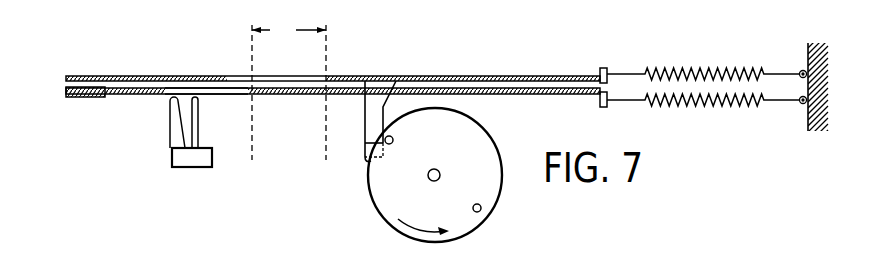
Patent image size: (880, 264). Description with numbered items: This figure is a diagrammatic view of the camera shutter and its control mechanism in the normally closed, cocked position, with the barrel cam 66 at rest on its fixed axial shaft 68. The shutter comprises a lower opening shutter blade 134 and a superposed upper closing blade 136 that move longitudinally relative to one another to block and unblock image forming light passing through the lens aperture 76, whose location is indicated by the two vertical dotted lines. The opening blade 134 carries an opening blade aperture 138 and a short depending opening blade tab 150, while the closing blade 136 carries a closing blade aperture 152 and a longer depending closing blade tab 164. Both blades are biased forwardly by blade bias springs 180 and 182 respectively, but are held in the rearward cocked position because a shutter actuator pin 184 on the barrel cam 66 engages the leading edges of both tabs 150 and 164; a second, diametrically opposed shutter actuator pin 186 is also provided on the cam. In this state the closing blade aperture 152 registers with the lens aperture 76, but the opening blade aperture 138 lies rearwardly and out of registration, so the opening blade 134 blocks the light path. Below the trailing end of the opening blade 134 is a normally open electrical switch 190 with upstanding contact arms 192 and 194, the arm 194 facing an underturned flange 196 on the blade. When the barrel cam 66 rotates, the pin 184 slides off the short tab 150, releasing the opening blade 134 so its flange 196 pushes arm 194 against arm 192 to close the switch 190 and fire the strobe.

The barrel cam 66 is at (494, 143).
The fixed axial shaft 68 is at (439, 171).
The lens aperture 76 is at (289, 30).
The opening shutter blade 134 is at (131, 95).
The closing shutter blade 136 is at (185, 76).
The opening blade aperture 138 is at (214, 95).
The opening blade tab 150 is at (368, 127).
The closing blade aperture 152 is at (289, 92).
The closing blade tab 164 is at (368, 157).
The blade bias spring 180 is at (750, 102).
The blade bias spring 182 is at (742, 70).
The shutter actuator pin 184 is at (393, 139).
The shutter actuator pin 186 is at (473, 207).
The electrical switch 190 is at (191, 167).
The contact arm 192 is at (198, 130).
The contact arm 194 is at (173, 126).
The underturned flange 196 is at (91, 98).